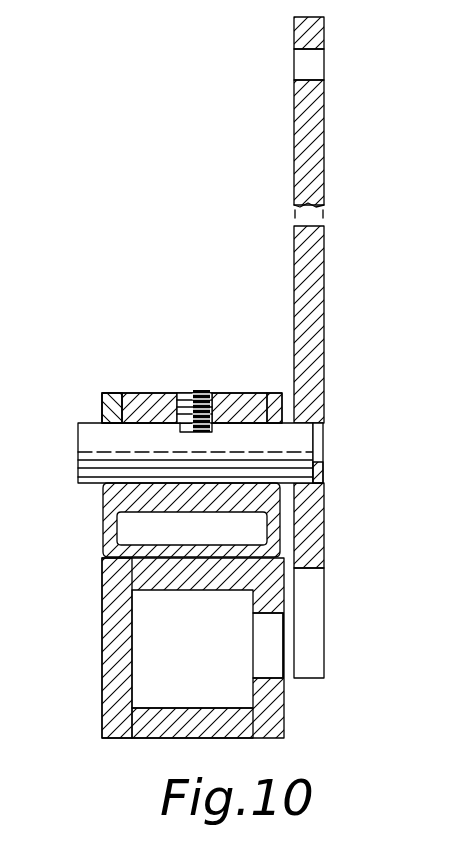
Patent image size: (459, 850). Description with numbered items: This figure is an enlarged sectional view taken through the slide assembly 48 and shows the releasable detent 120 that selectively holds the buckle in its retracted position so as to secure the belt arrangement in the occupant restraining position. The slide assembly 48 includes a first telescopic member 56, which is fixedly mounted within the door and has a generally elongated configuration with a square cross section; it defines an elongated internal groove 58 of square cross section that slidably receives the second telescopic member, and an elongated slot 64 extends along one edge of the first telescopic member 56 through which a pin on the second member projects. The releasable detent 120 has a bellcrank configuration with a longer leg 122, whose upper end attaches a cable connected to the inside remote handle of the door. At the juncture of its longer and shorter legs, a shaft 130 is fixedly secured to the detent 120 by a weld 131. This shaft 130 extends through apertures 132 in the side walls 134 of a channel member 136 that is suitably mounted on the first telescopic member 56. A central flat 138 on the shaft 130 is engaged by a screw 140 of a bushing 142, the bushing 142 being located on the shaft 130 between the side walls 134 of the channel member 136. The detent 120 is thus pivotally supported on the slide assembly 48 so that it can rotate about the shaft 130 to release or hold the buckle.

The releasable detent 120 is at (332, 221).
The longer leg 122 is at (316, 141).
The shaft 130 is at (297, 434).
The weld 131 is at (323, 481).
The apertures 132 is at (124, 425).
The side walls 134 is at (108, 513).
The channel member 136 is at (106, 410).
The central flat 138 is at (222, 427).
The screw 140 is at (196, 393).
The bushing 142 is at (160, 400).
The slide assembly 48 is at (100, 618).
The first telescopic member 56 is at (115, 660).
The internal groove 58 is at (152, 708).
The elongated slot 64 is at (272, 615).